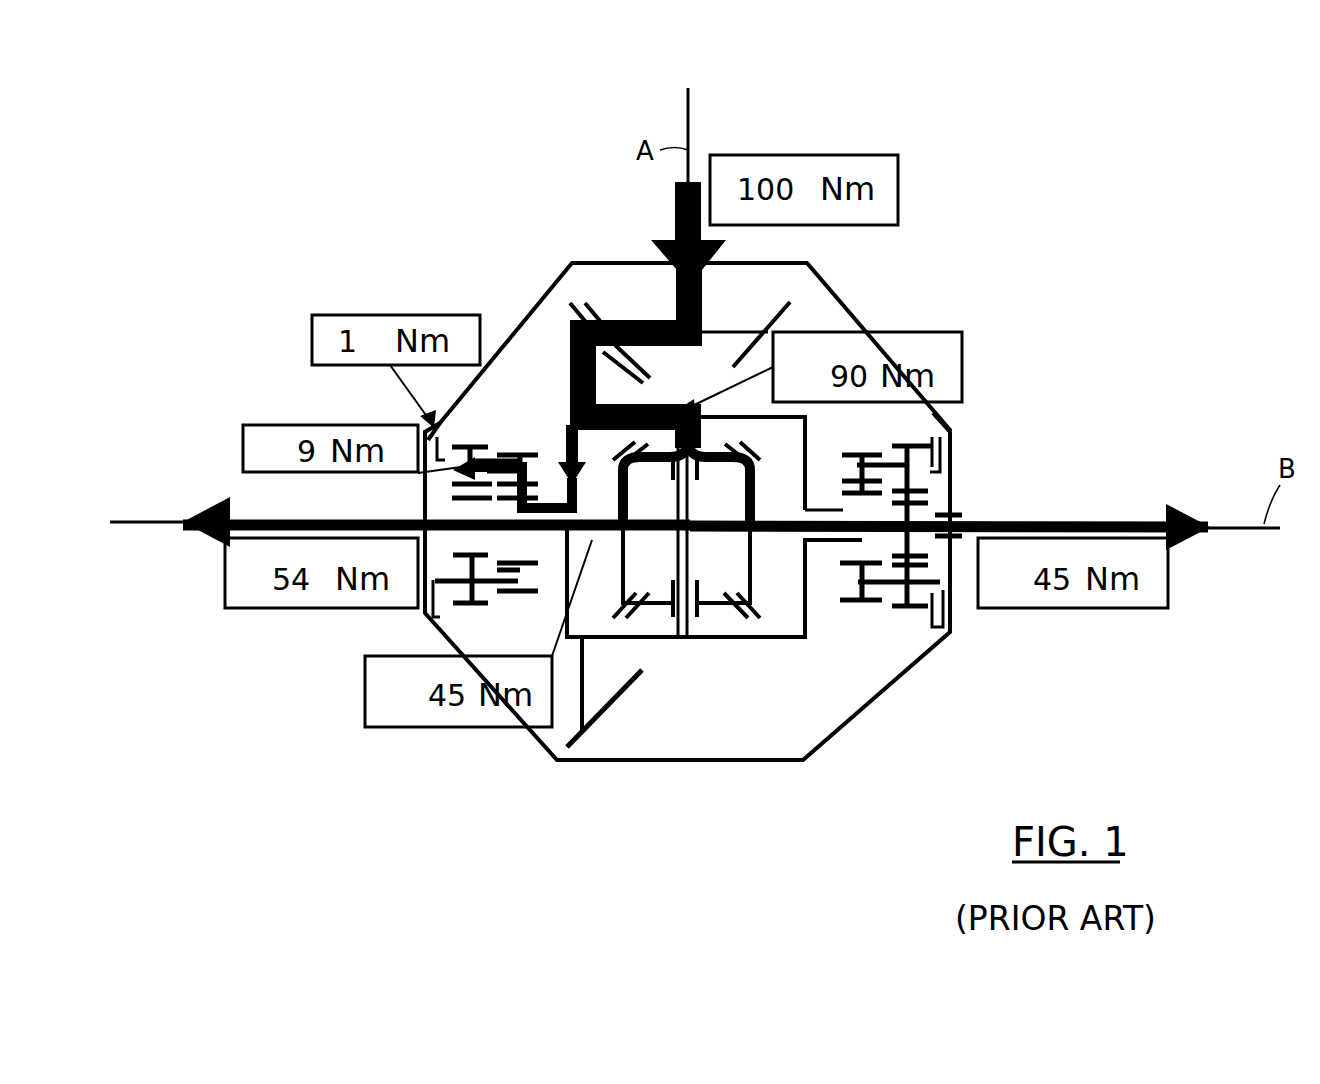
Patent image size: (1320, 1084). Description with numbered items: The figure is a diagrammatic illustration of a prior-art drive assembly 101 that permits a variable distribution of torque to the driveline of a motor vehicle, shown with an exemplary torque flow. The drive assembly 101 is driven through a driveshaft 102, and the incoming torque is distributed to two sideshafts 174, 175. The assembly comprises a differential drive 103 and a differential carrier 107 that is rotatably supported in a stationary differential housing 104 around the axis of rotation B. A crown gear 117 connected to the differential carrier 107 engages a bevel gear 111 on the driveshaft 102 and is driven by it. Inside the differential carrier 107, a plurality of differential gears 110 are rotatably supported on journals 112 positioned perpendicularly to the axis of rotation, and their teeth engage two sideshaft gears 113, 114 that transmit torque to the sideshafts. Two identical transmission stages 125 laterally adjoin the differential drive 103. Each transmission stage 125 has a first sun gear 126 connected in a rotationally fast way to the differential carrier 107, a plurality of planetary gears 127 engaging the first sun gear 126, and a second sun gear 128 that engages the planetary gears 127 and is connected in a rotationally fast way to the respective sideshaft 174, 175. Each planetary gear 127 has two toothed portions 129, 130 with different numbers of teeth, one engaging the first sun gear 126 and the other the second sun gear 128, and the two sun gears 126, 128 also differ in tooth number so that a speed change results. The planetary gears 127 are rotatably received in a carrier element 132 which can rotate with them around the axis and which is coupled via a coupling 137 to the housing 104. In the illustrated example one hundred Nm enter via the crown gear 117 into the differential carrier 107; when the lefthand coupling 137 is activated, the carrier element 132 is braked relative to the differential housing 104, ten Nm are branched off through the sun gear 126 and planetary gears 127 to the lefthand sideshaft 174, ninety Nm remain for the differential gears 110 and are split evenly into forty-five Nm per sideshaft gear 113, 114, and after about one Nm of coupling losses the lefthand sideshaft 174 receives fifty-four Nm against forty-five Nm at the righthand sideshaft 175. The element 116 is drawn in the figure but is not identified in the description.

The drive assembly 101 is at (498, 172).
The driveshaft 102 is at (692, 98).
The differential drive 103 is at (694, 665).
The differential housing 104 is at (572, 262).
The differential carrier 107 is at (733, 632).
The differential gears 110 is at (660, 610).
The bevel gear 111 is at (790, 308).
The journals 112 is at (689, 514).
The sideshaft gear 113 is at (748, 572).
The sideshaft gear 114 is at (625, 554).
The shaft portion 116 is at (584, 542).
The crown gear 117 is at (600, 722).
The transmission stage 125 is at (689, 542).
The first sun gear 126 is at (566, 536).
The planetary gears 127 is at (487, 600).
The second sun gear 128 is at (440, 568).
The toothed portion 129 is at (515, 452).
The toothed portion 130 is at (462, 446).
The carrier element 132 is at (445, 486).
The coupling 137 is at (424, 424).
The lefthand sideshaft 174 is at (128, 518).
The righthand sideshaft 175 is at (1238, 531).